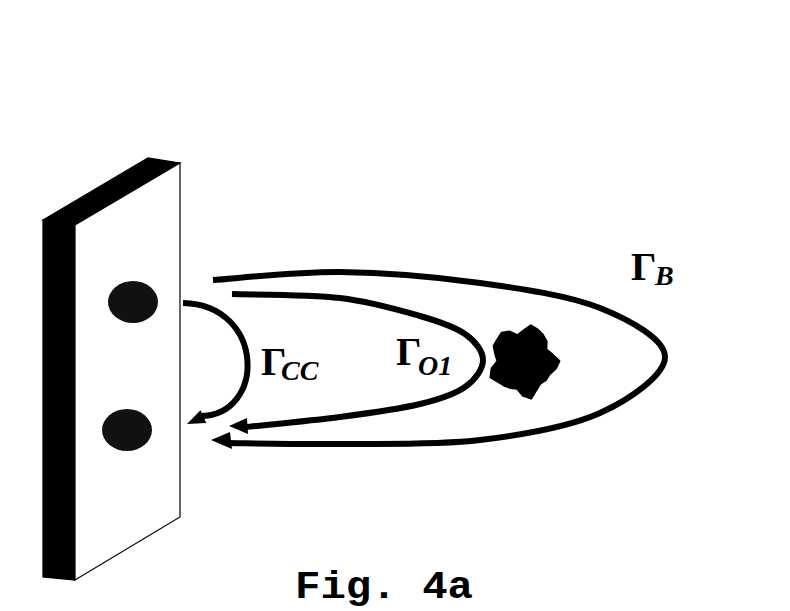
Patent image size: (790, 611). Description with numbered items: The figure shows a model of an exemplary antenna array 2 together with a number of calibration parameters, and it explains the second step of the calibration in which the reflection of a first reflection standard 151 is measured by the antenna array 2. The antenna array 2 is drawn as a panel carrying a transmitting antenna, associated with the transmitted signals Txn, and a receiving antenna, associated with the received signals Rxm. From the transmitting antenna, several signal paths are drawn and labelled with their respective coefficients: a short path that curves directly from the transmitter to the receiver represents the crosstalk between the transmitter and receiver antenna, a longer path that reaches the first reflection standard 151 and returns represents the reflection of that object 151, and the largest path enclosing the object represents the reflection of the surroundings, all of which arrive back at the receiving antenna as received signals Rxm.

The antenna array 2 is at (115, 317).
The first reflection standard 151 is at (542, 238).
The transmitted signals Txn is at (123, 265).
The received signals Rxm is at (144, 464).